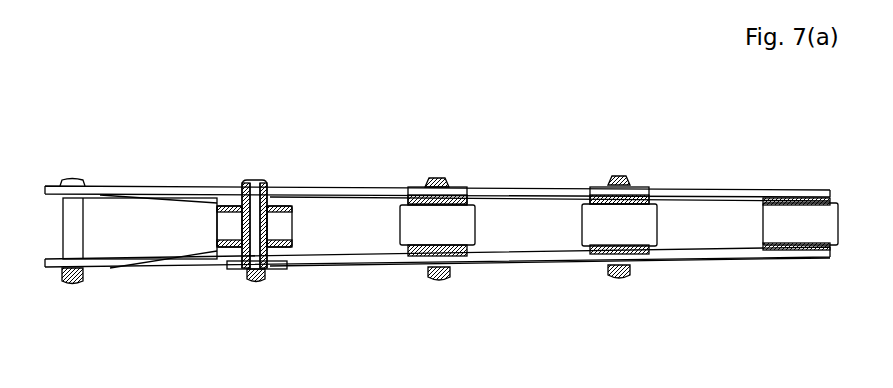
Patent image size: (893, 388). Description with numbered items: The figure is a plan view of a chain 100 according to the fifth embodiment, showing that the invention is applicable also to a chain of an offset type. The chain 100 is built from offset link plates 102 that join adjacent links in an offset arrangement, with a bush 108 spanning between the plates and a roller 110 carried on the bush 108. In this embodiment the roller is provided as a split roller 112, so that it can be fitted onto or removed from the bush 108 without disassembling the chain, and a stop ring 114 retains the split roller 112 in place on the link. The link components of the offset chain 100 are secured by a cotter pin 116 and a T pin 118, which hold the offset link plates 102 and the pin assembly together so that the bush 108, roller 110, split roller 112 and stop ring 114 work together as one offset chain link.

The chain 100 is at (572, 143).
The offset link plate 102 is at (390, 190).
The bush 108 is at (226, 189).
The roller 110 is at (214, 222).
The split roller 112 is at (288, 227).
The stop ring 114 is at (284, 254).
The cotter pin 116 is at (253, 190).
The T pin 118 is at (246, 270).